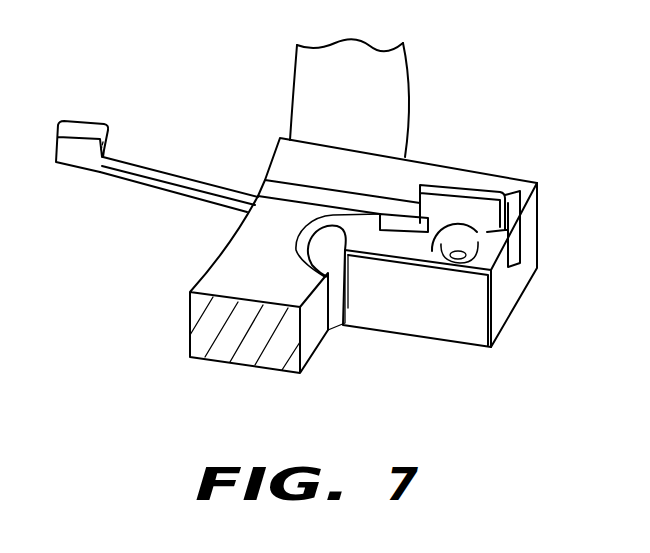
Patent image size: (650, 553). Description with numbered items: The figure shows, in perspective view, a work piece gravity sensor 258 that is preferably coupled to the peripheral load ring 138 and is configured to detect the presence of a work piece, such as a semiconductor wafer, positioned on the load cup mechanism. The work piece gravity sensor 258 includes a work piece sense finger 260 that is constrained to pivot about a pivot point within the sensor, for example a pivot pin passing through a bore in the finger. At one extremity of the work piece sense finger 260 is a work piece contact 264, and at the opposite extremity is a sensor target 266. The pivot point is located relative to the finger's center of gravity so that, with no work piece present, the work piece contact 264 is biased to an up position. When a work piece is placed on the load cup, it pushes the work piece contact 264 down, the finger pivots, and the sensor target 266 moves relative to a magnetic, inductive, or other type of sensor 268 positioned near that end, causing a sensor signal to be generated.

The peripheral load ring 138 is at (388, 96).
The work piece gravity sensor 258 is at (150, 236).
The work piece sense finger 260 is at (182, 172).
The work piece contact 264 is at (86, 123).
The sensor target 266 is at (464, 192).
The sensor 268 is at (477, 232).